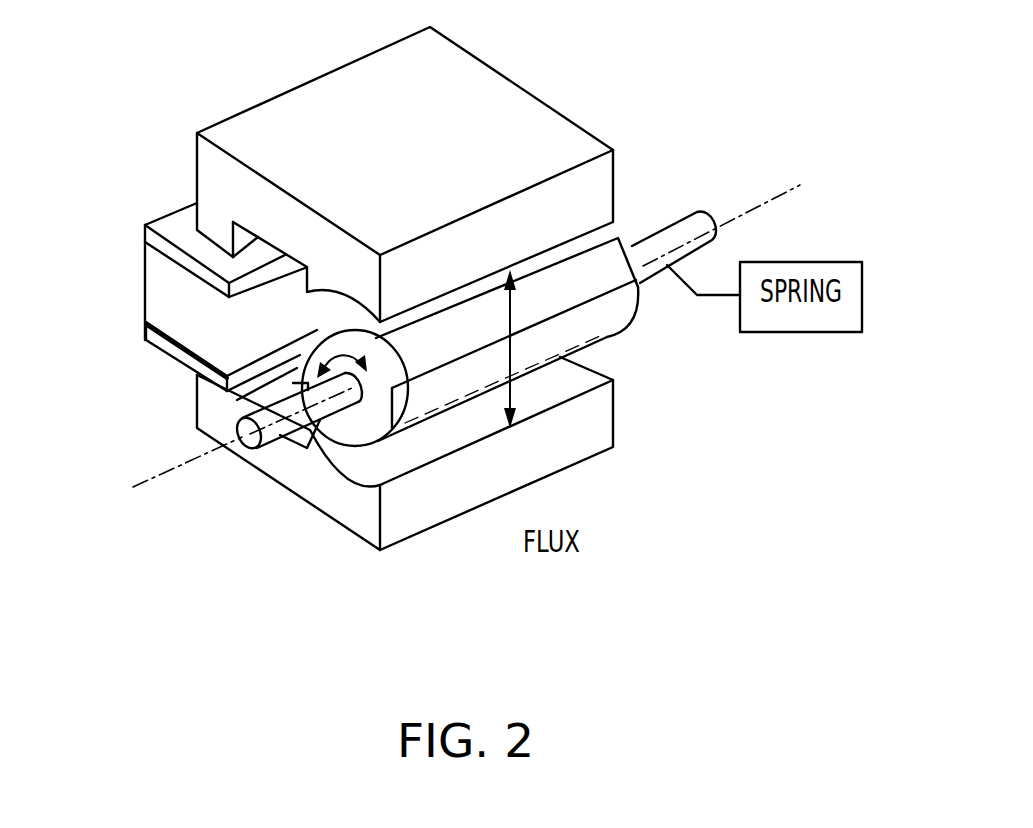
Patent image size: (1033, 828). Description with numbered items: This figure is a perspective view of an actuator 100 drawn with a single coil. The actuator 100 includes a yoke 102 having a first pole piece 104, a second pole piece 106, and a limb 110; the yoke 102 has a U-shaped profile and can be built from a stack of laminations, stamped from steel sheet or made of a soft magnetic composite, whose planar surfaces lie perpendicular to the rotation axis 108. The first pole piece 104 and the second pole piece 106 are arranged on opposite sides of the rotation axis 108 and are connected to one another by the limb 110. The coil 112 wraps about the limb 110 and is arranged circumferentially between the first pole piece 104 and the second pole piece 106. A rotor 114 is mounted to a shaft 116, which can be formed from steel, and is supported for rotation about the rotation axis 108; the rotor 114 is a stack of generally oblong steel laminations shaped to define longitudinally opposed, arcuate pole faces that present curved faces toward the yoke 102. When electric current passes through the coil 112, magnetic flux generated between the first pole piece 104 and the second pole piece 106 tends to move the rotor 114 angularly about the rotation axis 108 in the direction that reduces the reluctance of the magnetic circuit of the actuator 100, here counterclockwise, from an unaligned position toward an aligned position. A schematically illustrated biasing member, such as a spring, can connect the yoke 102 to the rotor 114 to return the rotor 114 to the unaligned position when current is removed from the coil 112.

The actuator 100 is at (222, 595).
The yoke 102 is at (452, 138).
The first pole piece 104 is at (343, 252).
The second pole piece 106 is at (367, 527).
The rotation axis 108 is at (133, 488).
The limb 110 is at (222, 228).
The coil 112 is at (185, 317).
The rotor 114 is at (540, 355).
The shaft 116 is at (272, 423).